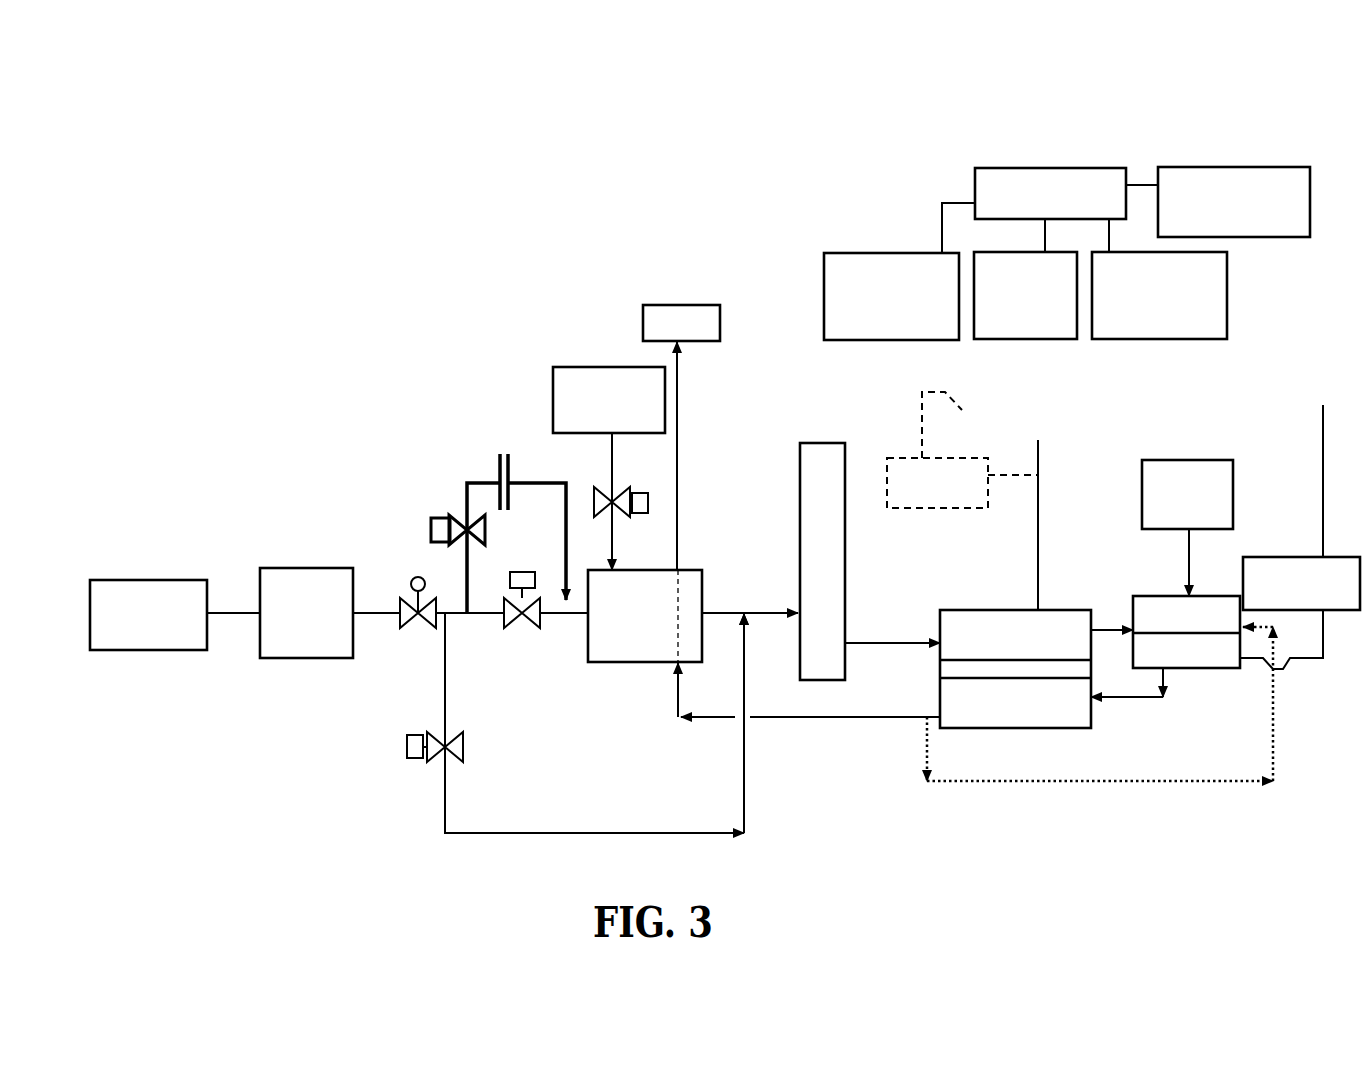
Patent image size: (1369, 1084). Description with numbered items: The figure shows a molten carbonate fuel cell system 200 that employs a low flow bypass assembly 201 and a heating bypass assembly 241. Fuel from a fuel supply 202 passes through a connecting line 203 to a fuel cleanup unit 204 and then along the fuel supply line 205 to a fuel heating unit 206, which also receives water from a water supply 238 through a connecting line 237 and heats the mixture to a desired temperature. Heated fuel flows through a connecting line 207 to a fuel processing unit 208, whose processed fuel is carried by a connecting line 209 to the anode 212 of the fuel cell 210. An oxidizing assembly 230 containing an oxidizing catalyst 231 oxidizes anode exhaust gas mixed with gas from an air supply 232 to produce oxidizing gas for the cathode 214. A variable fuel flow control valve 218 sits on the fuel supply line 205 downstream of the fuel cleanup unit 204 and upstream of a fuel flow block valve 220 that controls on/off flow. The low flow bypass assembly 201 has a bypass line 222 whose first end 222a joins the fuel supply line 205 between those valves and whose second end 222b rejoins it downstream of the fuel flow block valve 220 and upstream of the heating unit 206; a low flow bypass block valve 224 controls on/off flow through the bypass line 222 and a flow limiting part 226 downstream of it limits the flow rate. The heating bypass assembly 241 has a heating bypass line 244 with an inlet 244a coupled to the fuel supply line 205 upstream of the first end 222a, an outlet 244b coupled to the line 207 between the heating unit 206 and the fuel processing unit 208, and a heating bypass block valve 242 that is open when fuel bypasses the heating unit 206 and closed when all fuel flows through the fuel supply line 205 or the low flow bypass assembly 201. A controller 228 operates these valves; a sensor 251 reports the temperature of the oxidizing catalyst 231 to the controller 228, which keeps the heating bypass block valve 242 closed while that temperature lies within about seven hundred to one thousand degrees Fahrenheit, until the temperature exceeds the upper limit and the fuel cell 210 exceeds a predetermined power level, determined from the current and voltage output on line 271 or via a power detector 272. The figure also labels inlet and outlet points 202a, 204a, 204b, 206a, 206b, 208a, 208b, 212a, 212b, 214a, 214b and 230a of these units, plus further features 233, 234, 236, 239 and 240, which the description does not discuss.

The fuel cell system 200 is at (703, 286).
The low flow bypass assembly 201 is at (460, 418).
The fuel supply 202 is at (140, 580).
The fuel supply outlet 202a is at (212, 616).
The connecting line 203 is at (232, 611).
The fuel cleanup unit 204 is at (318, 568).
The fuel clean up inlet 204a is at (260, 622).
The fuel clean up outlet 204b is at (353, 626).
The fuel supply line 205 is at (478, 615).
The fuel heating unit 206 is at (606, 663).
The fuel heating inlet 206a is at (588, 640).
The fuel heating outlet 206b is at (703, 640).
The connecting line 207 is at (720, 612).
The fuel processing unit 208 is at (828, 443).
The fuel processing inlet 208a is at (796, 612).
The fuel processing outlet 208b is at (850, 647).
The connecting line 209 is at (865, 640).
The fuel cell 210 is at (986, 564).
The anode 212 is at (1005, 610).
The anode inlet 212a is at (940, 638).
The anode outlet 212b is at (1092, 630).
The cathode 214 is at (990, 720).
The cathode inlet 214a is at (1092, 700).
The cathode outlet 214b is at (935, 718).
The variable fuel flow control valve 218 is at (405, 598).
The fuel flow block valve 220 is at (520, 615).
The bypass line 222 is at (467, 490).
The first end 222a is at (462, 601).
The second end 222b is at (562, 615).
The low flow bypass block valve 224 is at (440, 518).
The flow limiting part 226 is at (497, 462).
The controller 228 is at (1075, 168).
The oxidizing assembly 230 is at (1178, 596).
The oxidizer outlet 230a is at (1165, 670).
The oxidizing catalyst 231 is at (1190, 668).
The air supply 232 is at (1205, 470).
The air supply line 233 is at (1190, 572).
The vent line 234 is at (677, 445).
The cathode exhaust line 236 is at (1058, 781).
The connecting line 237 is at (612, 446).
The water supply 238 is at (553, 385).
The water supply valve 239 is at (650, 503).
The vent 240 is at (712, 314).
The heating bypass assembly 241 is at (430, 784).
The heating bypass block valve 242 is at (455, 750).
The heating bypass line 244 is at (445, 697).
The inlet 244a is at (445, 640).
The outlet 244b is at (746, 614).
The sensor 251 is at (1347, 610).
The line 271 is at (1038, 502).
The power detector 272 is at (910, 458).